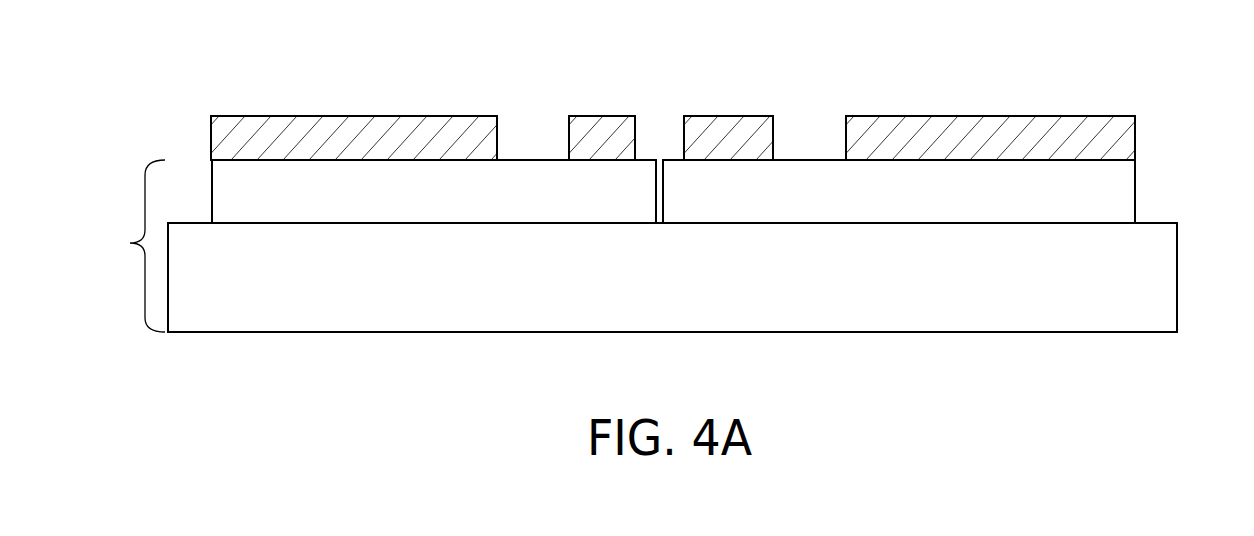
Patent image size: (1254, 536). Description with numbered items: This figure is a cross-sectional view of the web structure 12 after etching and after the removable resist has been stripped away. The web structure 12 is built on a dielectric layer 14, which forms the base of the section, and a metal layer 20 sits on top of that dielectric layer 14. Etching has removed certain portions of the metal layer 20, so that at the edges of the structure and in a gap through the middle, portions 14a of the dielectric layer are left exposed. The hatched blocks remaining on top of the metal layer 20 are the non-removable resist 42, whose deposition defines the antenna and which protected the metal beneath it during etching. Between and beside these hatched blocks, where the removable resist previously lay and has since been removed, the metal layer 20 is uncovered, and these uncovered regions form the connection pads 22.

The web structure 12 is at (128, 246).
The dielectric layer 14 is at (1150, 268).
The exposed portions of the dielectric layer 14a is at (190, 223).
The metal layer 20 is at (1137, 193).
The connection pads 22 is at (643, 159).
The non-removable resist 42 is at (952, 116).